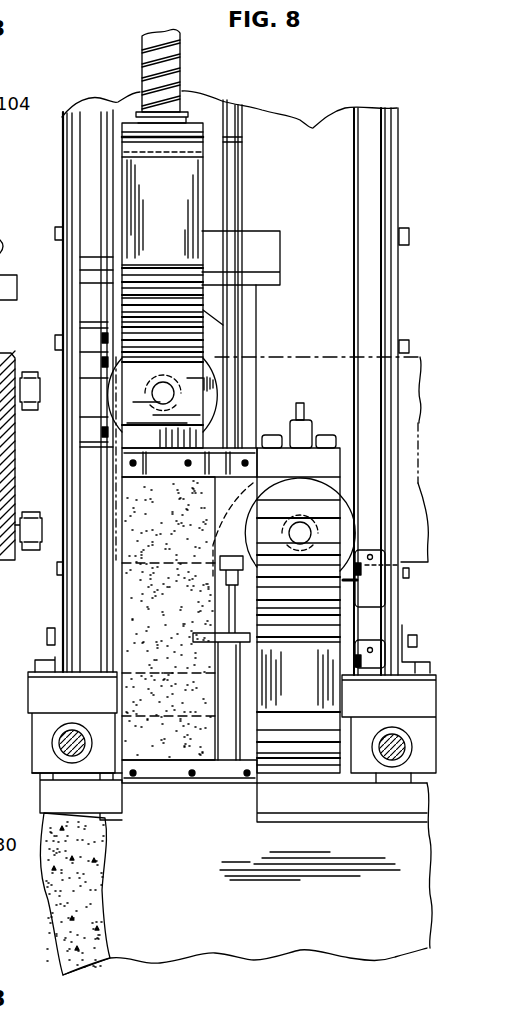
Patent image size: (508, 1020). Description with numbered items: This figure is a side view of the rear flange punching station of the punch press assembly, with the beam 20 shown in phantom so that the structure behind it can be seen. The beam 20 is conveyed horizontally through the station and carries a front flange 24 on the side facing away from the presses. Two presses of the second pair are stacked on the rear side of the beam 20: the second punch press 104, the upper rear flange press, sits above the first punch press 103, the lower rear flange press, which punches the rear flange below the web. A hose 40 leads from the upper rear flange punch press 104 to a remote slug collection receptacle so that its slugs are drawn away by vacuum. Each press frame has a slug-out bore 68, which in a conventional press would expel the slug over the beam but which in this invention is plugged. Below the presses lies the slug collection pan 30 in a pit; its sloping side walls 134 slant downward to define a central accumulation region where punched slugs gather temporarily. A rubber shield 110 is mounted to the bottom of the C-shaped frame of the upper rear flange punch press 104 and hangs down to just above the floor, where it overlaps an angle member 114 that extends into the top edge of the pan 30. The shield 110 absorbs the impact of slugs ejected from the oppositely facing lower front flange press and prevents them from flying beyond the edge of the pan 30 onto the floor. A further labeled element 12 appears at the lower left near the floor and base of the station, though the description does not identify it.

The base member 12 is at (85, 810).
The beam 20 is at (317, 350).
The front flange 24 is at (1, 351).
The slug collection pan 30 is at (351, 843).
The hose 40 is at (141, 40).
The slug-out bore 68 is at (0, 592).
The first punch press 103 is at (345, 533).
The second punch press 104 is at (207, 219).
The rubber shield 110 is at (143, 513).
The angle member 114 is at (213, 792).
The sloping side walls 134 is at (304, 830).